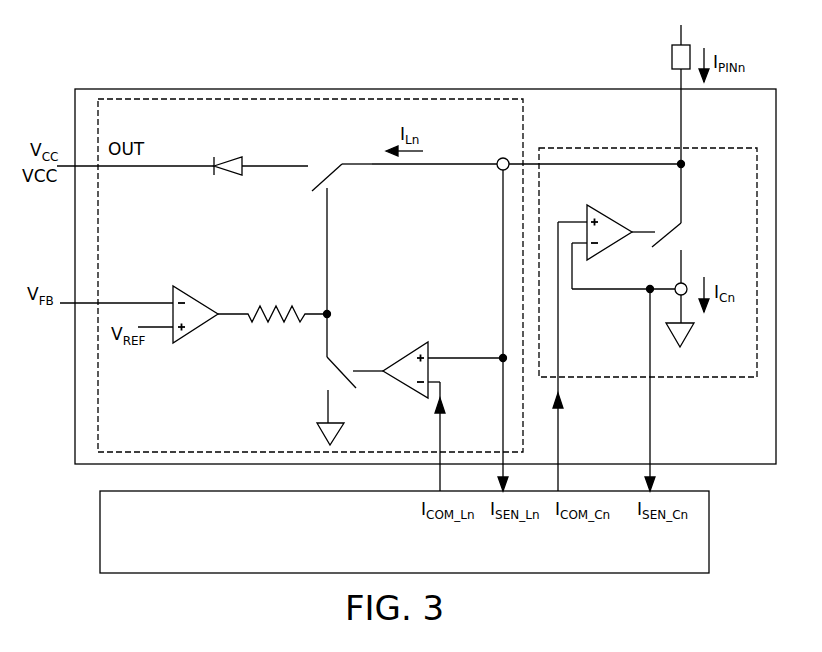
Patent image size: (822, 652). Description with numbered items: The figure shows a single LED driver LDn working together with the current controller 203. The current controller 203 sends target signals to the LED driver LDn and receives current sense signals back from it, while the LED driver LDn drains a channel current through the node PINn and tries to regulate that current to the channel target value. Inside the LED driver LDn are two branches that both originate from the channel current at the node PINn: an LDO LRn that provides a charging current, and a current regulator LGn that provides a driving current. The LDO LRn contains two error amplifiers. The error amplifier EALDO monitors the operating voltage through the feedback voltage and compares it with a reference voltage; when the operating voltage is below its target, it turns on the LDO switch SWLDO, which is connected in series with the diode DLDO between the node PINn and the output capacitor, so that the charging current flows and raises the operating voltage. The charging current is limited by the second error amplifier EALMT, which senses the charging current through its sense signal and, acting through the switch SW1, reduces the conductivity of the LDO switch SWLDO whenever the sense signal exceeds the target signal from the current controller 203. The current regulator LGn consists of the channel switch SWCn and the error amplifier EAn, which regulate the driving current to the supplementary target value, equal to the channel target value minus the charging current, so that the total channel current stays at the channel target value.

The current controller 203 is at (387, 541).
The LED driver LDn is at (592, 120).
The LDO LRn is at (511, 127).
The current regulator LGn is at (746, 183).
The diode DLDO is at (225, 152).
The LDO switch SWLDO is at (337, 161).
The switch SW1 is at (318, 401).
The error amplifier EALDO is at (181, 292).
The error amplifier EALMT is at (419, 396).
The node PINn is at (655, 58).
The error amplifier EAn is at (588, 212).
The channel switch SWCn is at (689, 253).